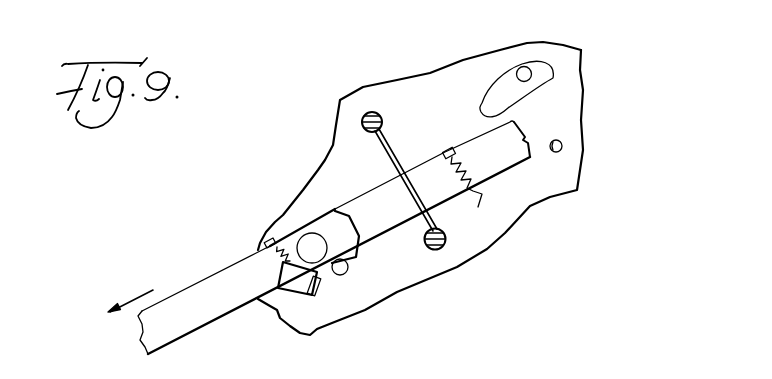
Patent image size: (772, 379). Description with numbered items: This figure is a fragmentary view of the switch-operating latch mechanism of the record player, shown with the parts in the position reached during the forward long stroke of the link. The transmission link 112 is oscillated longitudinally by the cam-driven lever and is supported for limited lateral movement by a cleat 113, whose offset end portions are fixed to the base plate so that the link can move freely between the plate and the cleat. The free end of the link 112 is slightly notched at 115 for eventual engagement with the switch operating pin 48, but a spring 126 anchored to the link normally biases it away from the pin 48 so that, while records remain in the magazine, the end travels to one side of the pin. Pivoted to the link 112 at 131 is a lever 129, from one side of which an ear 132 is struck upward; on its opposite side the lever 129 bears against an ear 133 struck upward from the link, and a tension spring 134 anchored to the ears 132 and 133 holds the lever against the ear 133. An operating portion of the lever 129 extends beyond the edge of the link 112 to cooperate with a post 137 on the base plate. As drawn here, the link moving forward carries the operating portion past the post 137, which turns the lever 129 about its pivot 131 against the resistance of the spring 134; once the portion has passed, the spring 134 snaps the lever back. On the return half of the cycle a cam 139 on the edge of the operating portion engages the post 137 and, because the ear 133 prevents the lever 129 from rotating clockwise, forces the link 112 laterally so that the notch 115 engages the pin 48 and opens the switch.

The pin 48 is at (524, 67).
The transmission link 112 is at (503, 160).
The cleat 113 is at (384, 143).
The notch 115 is at (513, 122).
The spring 126 is at (478, 207).
The lever 129 is at (335, 211).
The pivot 131 is at (313, 237).
The ear 132 is at (312, 294).
The ear 133 is at (265, 239).
The tension spring 134 is at (282, 289).
The post 137 is at (344, 273).
The cam 139 is at (355, 227).